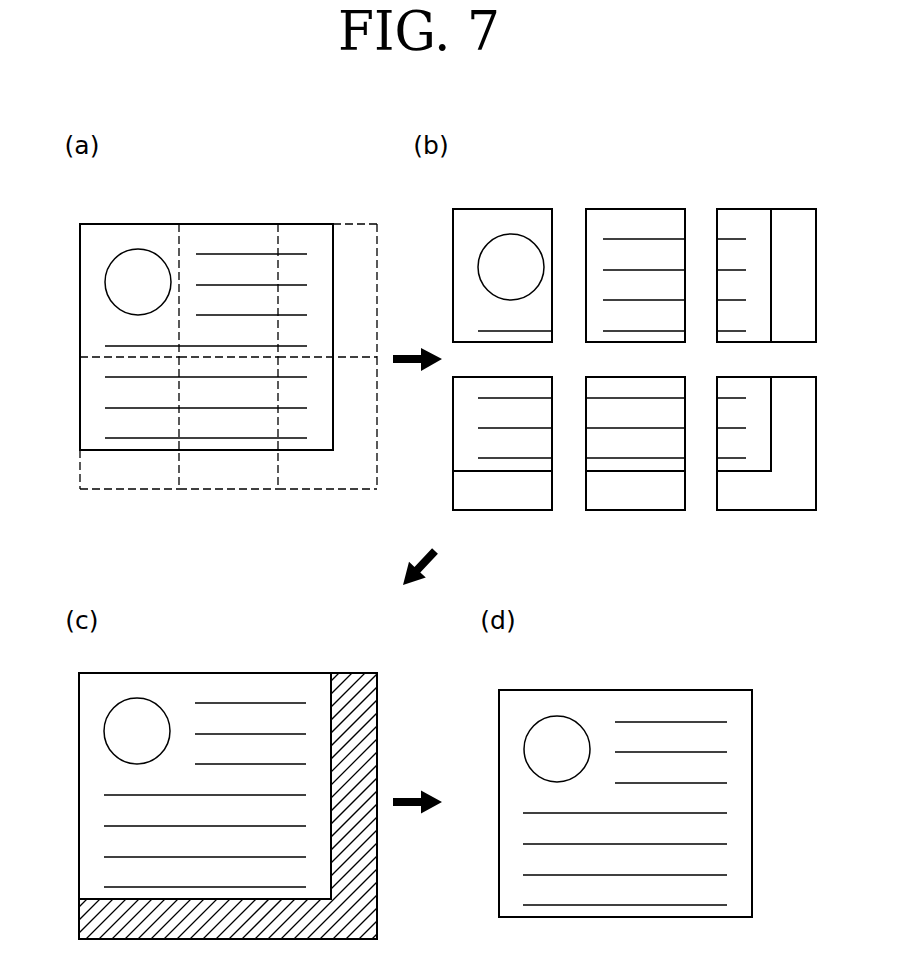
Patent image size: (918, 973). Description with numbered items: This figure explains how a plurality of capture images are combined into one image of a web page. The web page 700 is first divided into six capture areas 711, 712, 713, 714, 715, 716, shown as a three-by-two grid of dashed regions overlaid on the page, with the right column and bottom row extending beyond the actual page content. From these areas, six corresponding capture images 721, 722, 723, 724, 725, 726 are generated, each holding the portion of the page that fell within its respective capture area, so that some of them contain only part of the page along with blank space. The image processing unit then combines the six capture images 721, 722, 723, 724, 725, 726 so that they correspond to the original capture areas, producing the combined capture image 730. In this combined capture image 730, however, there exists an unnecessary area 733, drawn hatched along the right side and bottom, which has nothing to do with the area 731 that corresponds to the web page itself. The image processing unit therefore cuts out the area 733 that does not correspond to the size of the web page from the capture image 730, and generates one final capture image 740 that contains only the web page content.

The web page 700 is at (80, 255).
The first capture area 711 is at (127, 224).
The second capture area 712 is at (229, 224).
The third capture area 713 is at (348, 224).
The fourth capture area 714 is at (139, 490).
The fifth capture area 715 is at (233, 490).
The sixth capture area 716 is at (314, 490).
The first capture image 721 is at (500, 209).
The second capture image 722 is at (635, 209).
The third capture image 723 is at (785, 209).
The fourth capture image 724 is at (516, 511).
The fifth capture image 725 is at (633, 511).
The sixth capture image 726 is at (755, 511).
The combined capture image 730 is at (377, 672).
The web page area 731 is at (91, 706).
The unnecessary area 733 is at (360, 735).
The final capture image 740 is at (752, 690).